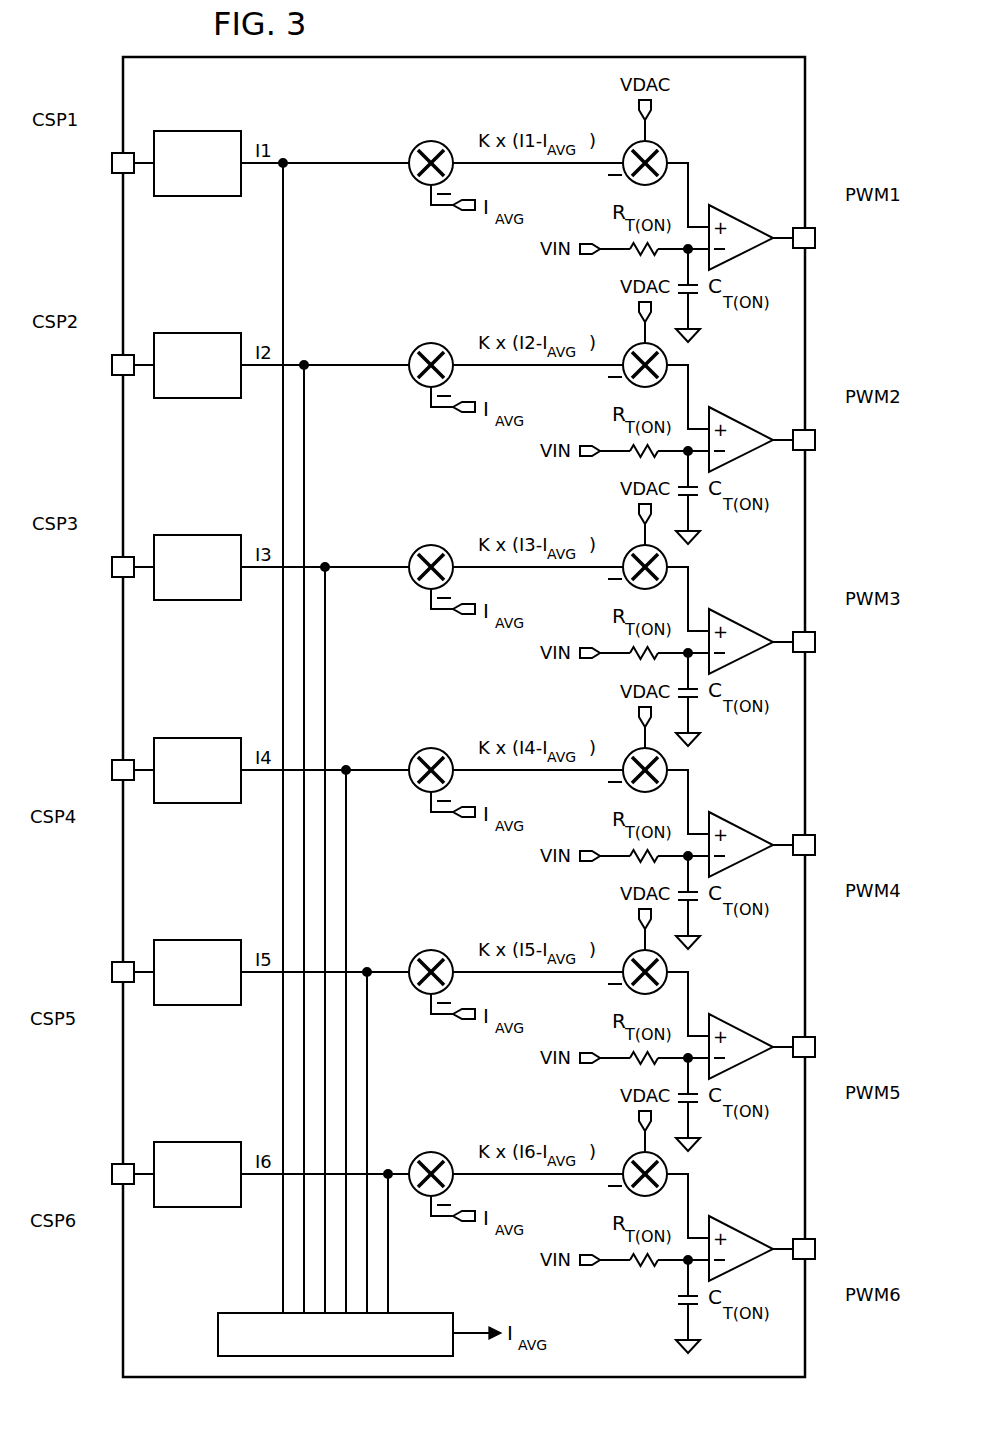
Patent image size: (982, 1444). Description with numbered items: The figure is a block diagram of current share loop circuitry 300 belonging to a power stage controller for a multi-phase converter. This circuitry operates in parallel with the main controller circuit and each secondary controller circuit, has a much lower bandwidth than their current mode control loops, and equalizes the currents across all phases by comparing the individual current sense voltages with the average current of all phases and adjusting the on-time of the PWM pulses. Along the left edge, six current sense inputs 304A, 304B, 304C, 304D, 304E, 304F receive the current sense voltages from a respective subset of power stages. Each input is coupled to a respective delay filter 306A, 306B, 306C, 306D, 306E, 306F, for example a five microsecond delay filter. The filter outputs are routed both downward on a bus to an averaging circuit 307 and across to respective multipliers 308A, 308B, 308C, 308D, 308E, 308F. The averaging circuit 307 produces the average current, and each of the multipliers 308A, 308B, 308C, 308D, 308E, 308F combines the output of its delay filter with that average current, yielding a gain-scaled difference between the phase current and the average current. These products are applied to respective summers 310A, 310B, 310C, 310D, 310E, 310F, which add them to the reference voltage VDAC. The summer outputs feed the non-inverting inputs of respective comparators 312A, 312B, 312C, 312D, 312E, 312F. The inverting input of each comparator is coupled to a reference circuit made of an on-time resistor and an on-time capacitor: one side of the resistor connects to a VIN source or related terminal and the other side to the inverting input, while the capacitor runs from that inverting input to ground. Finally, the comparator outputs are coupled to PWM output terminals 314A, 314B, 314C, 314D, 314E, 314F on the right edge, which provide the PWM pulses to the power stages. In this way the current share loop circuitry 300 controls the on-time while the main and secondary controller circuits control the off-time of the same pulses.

The current share loop circuitry 300 is at (70, 55).
The current sense input 304A is at (81, 153).
The current sense input 304B is at (81, 355).
The current sense input 304C is at (81, 557).
The current sense input 304D is at (81, 781).
The current sense input 304E is at (81, 983).
The current sense input 304F is at (81, 1185).
The delay filter 306A is at (197, 138).
The delay filter 306B is at (197, 340).
The delay filter 306C is at (197, 542).
The delay filter 306D is at (197, 799).
The delay filter 306E is at (197, 1001).
The delay filter 306F is at (197, 1203).
The averaging circuit 307 is at (218, 1333).
The multiplier 308A is at (429, 150).
The multiplier 308B is at (429, 352).
The multiplier 308C is at (429, 554).
The multiplier 308D is at (429, 757).
The multiplier 308E is at (429, 959).
The multiplier 308F is at (429, 1161).
The summer 310A is at (622, 142).
The summer 310B is at (622, 344).
The summer 310C is at (622, 546).
The summer 310D is at (622, 749).
The summer 310E is at (622, 951).
The summer 310F is at (622, 1153).
The comparator 312A is at (752, 222).
The comparator 312B is at (752, 424).
The comparator 312C is at (752, 626).
The comparator 312D is at (753, 829).
The comparator 312E is at (751, 1031).
The comparator 312F is at (751, 1233).
The PWM output terminal 314A is at (850, 228).
The PWM output terminal 314B is at (850, 430).
The PWM output terminal 314C is at (850, 632).
The PWM output terminal 314D is at (851, 856).
The PWM output terminal 314E is at (849, 1058).
The PWM output terminal 314F is at (849, 1260).